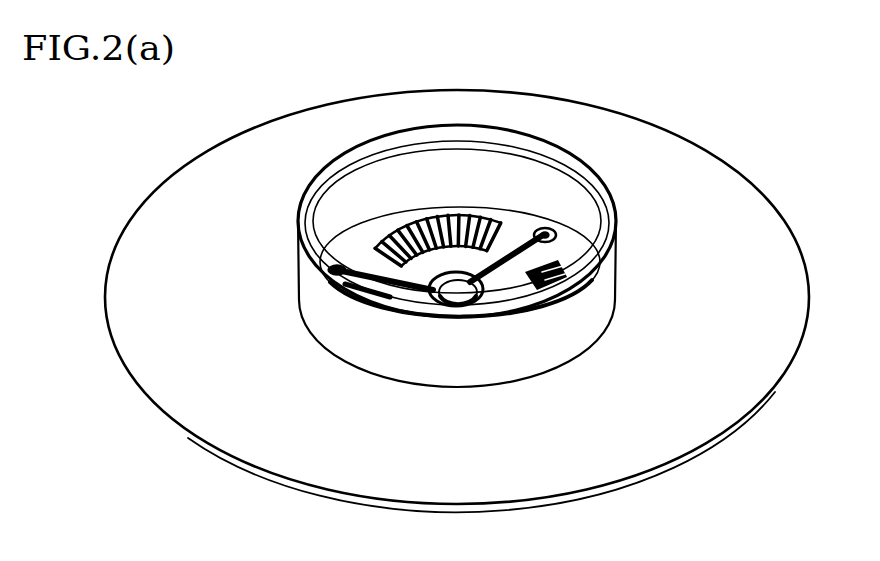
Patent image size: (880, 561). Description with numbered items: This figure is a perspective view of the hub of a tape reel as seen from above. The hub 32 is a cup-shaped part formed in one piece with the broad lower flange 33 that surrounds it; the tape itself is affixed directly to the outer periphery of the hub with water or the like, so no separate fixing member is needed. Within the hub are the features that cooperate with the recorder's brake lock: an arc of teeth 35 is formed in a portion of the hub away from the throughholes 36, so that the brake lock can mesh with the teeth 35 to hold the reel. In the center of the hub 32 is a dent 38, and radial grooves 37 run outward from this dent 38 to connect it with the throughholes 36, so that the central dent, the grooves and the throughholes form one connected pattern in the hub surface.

The hub 32 is at (600, 280).
The lower flange 33 is at (147, 263).
The teeth 35 is at (397, 230).
The throughholes 36 is at (546, 228).
The radial grooves 37 is at (517, 235).
The dent 38 is at (420, 312).